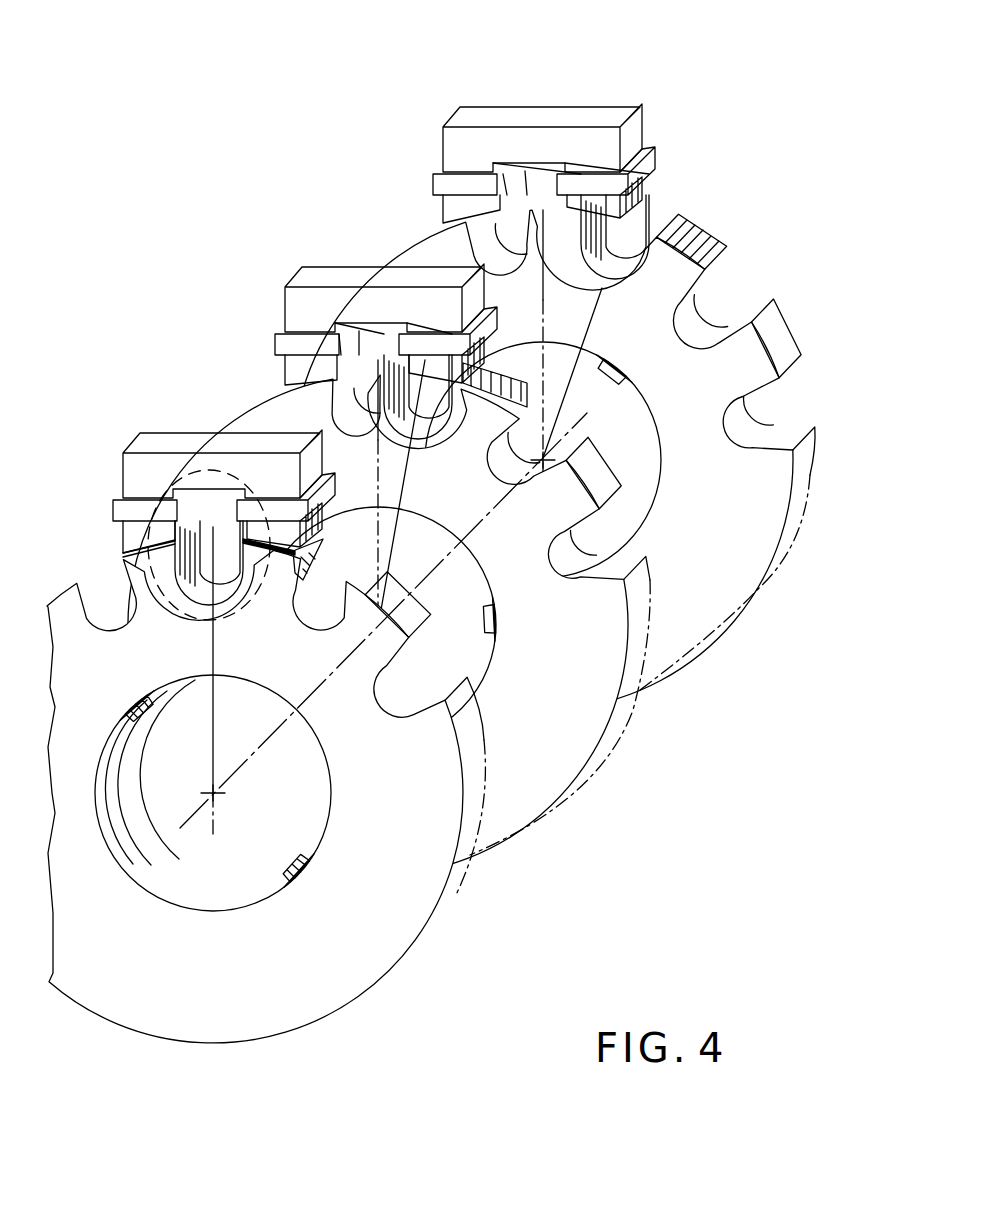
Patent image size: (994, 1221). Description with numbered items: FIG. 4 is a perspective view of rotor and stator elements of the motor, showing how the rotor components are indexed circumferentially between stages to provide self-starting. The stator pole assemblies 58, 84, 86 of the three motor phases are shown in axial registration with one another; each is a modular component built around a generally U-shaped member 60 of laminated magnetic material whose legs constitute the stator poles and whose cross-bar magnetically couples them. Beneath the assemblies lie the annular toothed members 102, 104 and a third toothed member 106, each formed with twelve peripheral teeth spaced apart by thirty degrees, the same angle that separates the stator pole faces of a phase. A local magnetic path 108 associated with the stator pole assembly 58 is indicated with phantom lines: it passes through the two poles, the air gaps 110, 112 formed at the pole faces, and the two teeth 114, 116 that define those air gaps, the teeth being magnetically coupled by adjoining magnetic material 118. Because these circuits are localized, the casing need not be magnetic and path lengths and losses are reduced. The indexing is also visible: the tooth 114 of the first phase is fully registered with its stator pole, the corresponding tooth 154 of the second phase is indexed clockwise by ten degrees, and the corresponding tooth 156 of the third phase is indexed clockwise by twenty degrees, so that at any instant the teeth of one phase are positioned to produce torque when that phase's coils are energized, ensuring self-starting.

The stator pole assembly 58 is at (226, 545).
The U-shaped member 60 is at (194, 440).
The stator pole assembly 84 is at (363, 311).
The stator pole assembly 86 is at (580, 154).
The toothed member 102 is at (457, 902).
The toothed member 104 is at (618, 746).
The third indexing disc 106 is at (787, 548).
The local magnetic path 108 is at (158, 611).
The air gap 110 is at (103, 516).
The air gap 112 is at (337, 558).
The tooth 114 is at (97, 543).
The tooth 116 is at (274, 616).
The adjoining magnetic material 118 is at (209, 612).
The tooth 154 is at (325, 381).
The tooth 156 is at (618, 225).